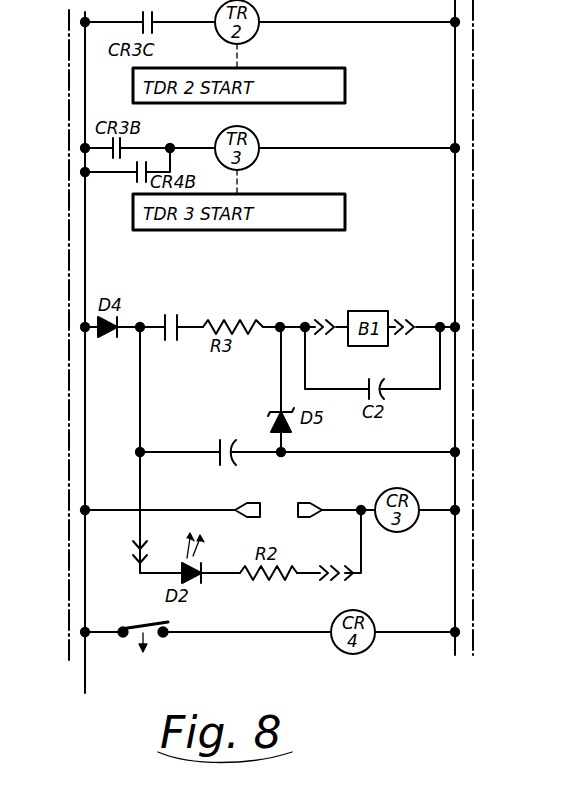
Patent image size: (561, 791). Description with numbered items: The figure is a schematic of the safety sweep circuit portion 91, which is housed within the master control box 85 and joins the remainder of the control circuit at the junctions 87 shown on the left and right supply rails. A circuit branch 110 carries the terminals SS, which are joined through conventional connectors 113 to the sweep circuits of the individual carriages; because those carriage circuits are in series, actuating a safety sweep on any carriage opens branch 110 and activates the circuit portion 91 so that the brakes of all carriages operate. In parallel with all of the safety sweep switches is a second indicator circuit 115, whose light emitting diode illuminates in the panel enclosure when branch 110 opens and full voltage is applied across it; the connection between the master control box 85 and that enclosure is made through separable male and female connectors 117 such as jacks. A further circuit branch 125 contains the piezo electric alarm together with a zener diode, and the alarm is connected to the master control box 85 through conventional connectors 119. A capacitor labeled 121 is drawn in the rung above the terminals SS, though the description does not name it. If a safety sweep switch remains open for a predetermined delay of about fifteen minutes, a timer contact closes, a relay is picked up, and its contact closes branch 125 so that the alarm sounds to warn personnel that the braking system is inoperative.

The master control box 85 is at (64, 37).
The circuit branch 125 is at (146, 325).
The connectors 119 is at (334, 322).
The capacitor C11 timing circuit 121 is at (254, 458).
The connectors 113 is at (258, 503).
The separable male and female connectors 117 is at (345, 577).
The circuit branch 110 is at (201, 512).
The second indicator circuit 115 is at (322, 578).
The safety sweep circuit portion 91 is at (276, 637).
The junctions 87 is at (87, 681).